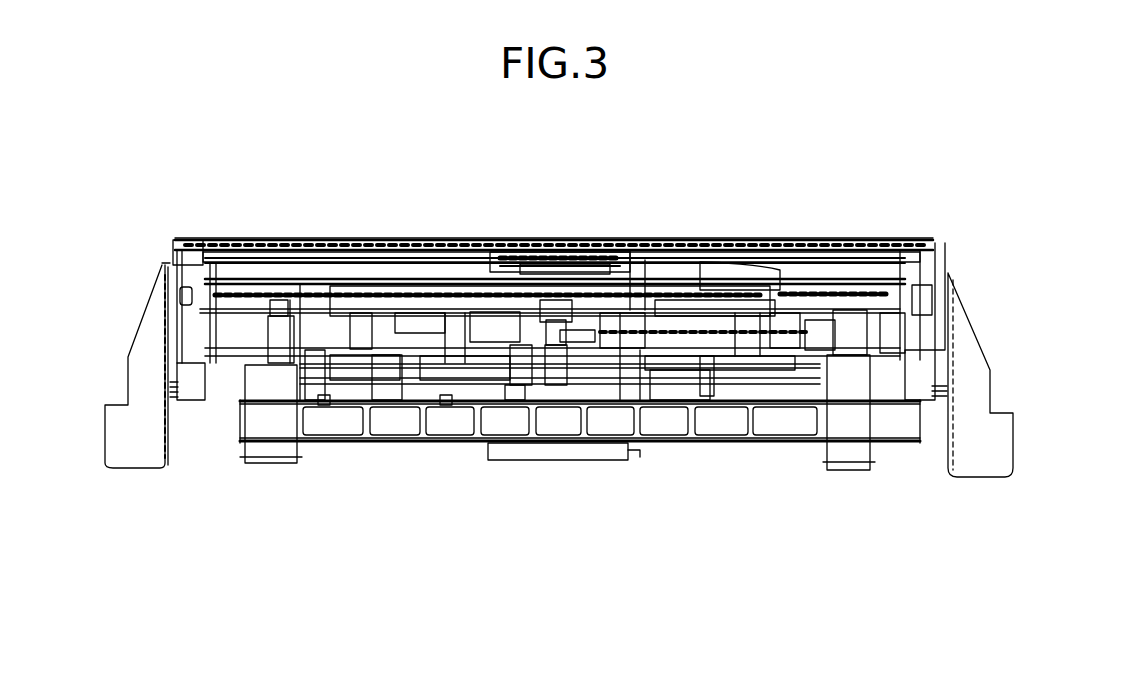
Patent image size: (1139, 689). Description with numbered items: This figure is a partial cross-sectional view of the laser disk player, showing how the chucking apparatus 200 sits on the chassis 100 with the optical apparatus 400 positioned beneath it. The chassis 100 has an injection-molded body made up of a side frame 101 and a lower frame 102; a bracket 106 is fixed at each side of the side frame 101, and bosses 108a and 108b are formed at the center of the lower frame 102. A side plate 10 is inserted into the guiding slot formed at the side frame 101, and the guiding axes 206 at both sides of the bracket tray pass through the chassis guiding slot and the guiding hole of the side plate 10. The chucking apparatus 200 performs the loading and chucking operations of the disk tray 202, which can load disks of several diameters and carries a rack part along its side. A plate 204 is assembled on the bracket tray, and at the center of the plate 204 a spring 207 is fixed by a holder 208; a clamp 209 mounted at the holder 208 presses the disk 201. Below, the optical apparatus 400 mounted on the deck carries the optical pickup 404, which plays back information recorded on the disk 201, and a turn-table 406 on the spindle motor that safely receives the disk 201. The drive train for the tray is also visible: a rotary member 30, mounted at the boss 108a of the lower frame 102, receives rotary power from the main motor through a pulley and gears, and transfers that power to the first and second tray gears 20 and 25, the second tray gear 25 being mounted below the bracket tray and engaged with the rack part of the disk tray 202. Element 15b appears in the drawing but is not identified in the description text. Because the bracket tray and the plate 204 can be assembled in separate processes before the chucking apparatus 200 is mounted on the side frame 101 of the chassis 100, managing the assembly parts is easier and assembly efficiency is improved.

The side plate 10 is at (205, 322).
The shaft 15b is at (516, 400).
The first tray gear 20 is at (312, 398).
The second tray gear 25 is at (280, 373).
The rotary member 30 is at (387, 400).
The chassis 100 is at (862, 578).
The side frame 101 is at (950, 175).
The lower frame 102 is at (783, 445).
The bracket 106 is at (990, 450).
The boss 108a is at (447, 400).
The boss 108b is at (325, 398).
The chucking apparatus 200 is at (800, 187).
The disk 201 is at (777, 300).
The disk tray 202 is at (238, 243).
The plate 204 is at (292, 240).
The guiding axis 206 is at (180, 240).
The spring 207 is at (512, 245).
The holder 208 is at (628, 245).
The clamp 209 is at (535, 245).
The optical apparatus 400 is at (437, 247).
The optical pickup 404 is at (670, 318).
The turn-table 406 is at (495, 300).